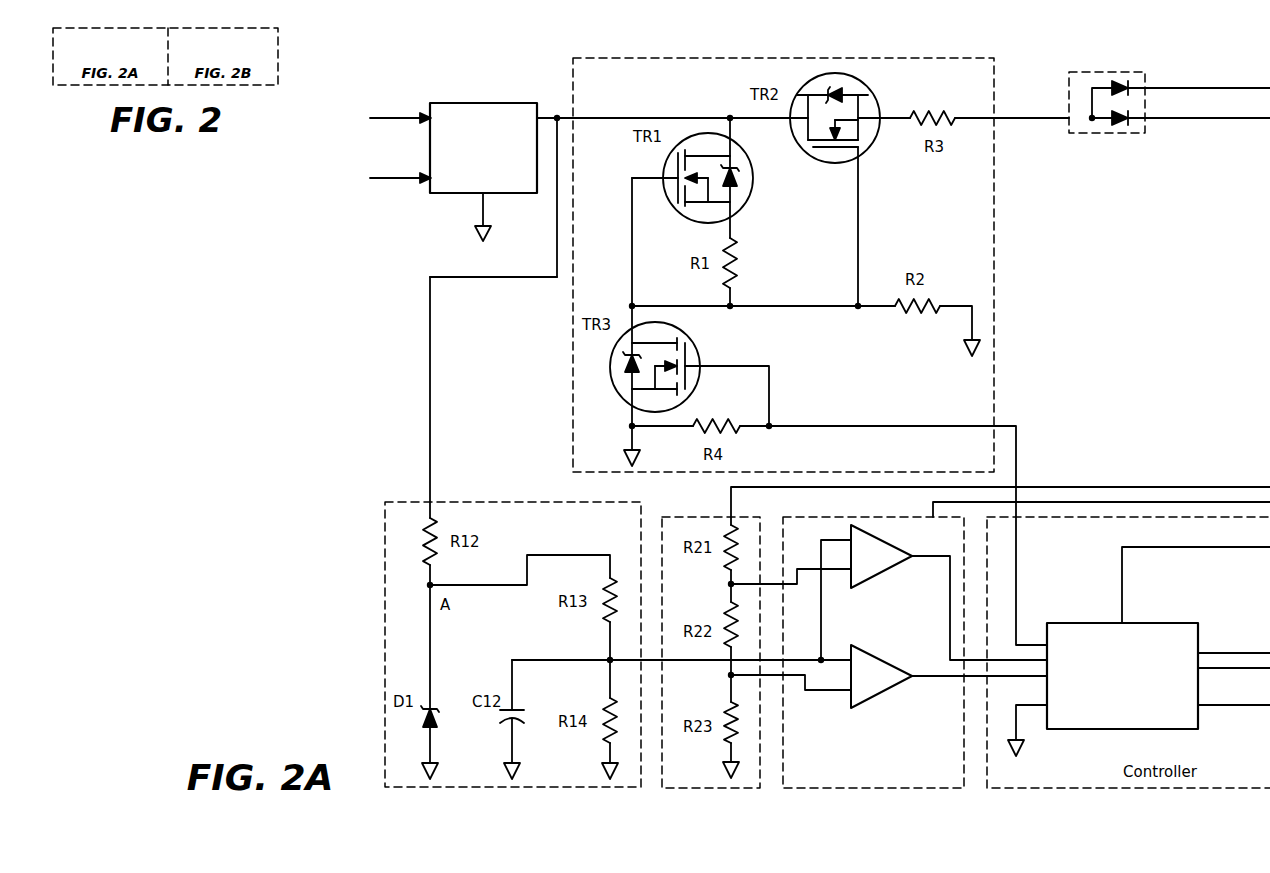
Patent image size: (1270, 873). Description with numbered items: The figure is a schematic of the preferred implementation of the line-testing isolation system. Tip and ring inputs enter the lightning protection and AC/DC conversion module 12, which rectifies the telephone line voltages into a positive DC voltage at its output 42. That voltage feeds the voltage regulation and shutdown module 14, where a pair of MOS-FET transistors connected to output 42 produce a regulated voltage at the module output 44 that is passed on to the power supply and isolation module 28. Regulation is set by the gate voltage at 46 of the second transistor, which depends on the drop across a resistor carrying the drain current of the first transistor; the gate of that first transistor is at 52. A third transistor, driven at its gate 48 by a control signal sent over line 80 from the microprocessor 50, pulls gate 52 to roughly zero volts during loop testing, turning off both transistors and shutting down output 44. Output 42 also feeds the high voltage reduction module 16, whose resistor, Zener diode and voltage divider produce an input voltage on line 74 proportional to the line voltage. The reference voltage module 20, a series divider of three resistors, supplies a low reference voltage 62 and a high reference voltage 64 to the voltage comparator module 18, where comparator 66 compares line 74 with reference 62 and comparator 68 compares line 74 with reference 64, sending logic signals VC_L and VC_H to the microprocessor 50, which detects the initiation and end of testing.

The lightning protection and AC/DC conversion module 12 is at (483, 103).
The output of the lightning protection and AC/DC conversion module 42 is at (557, 113).
The output of the voltage regulation and shutdown module 44 is at (980, 116).
The power supply and isolation 28 is at (1090, 133).
The gate of transistor TR1 52 is at (632, 245).
The gate of transistor TR2 46 is at (858, 222).
The voltage regulation and shutdown module 14 is at (573, 382).
The gate of transistor TR3 48 is at (760, 365).
The control line 80 is at (1018, 461).
The high voltage reduction module 16 is at (495, 502).
The reference voltage circuit 20 is at (693, 517).
The voltage comparator module 18 is at (815, 517).
The microprocessor 50 is at (1103, 623).
The second voltage comparator 68 is at (897, 569).
The first voltage comparator 66 is at (897, 689).
The high reference voltage 64 is at (726, 586).
The low reference voltage 62 is at (726, 677).
The input voltage line 74 is at (608, 658).